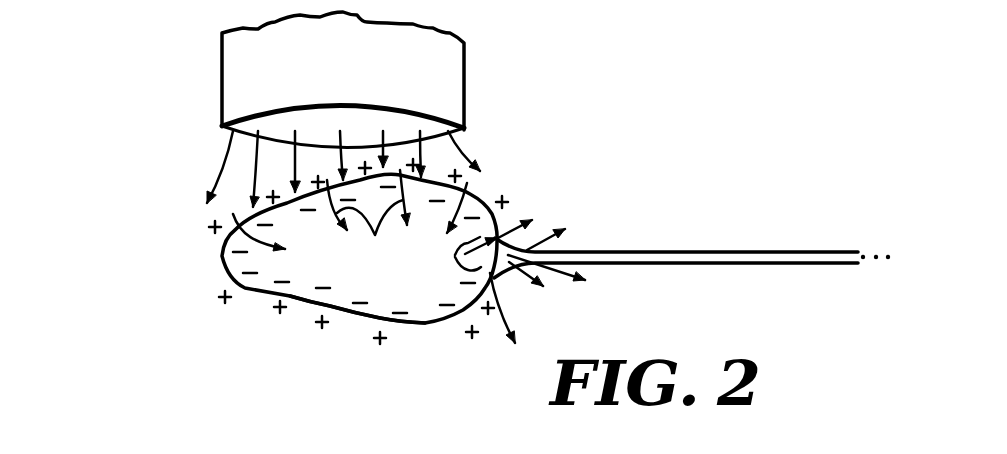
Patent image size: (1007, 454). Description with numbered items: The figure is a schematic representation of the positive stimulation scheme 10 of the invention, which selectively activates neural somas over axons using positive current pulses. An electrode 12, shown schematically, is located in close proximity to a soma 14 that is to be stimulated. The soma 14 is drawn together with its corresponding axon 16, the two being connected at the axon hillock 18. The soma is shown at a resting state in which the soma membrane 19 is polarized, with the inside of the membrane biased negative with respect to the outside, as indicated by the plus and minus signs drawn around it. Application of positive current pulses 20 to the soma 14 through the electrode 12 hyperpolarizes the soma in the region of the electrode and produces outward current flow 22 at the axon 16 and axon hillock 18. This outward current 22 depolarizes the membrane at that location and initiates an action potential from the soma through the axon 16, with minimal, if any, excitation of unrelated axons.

The positive stimulation scheme 10 is at (155, 175).
The electrode 12 is at (453, 96).
The soma 14 is at (421, 298).
The axon 16 is at (726, 251).
The axon hillock 18 is at (510, 265).
The soma membrane 19 is at (356, 322).
The positive current pulses 20 is at (228, 161).
The outward current flow 22 is at (265, 240).